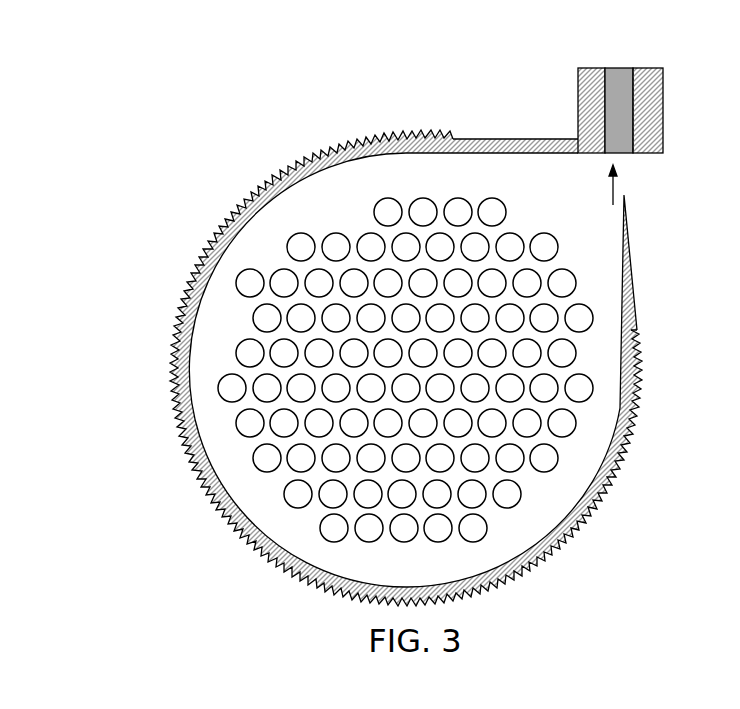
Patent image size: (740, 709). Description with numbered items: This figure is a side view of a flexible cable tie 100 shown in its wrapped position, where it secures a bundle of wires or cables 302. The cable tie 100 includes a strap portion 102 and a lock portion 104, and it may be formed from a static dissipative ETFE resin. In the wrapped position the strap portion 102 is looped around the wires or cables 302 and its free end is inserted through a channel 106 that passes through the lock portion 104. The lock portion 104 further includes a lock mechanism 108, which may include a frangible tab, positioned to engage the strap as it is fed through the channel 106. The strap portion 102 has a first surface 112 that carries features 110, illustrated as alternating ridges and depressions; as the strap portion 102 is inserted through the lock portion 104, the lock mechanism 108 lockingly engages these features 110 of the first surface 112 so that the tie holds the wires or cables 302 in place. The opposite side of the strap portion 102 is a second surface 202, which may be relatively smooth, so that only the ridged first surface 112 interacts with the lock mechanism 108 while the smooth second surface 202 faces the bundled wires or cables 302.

The flexible cable tie 100 is at (188, 106).
The strap portion 102 is at (517, 139).
The lock portion 104 is at (578, 82).
The channel 106 is at (627, 149).
The lock mechanism 108 is at (628, 100).
The features 110 is at (378, 138).
The first surface 112 is at (633, 260).
The second surface 202 is at (377, 157).
The wires or cables 302 is at (547, 233).